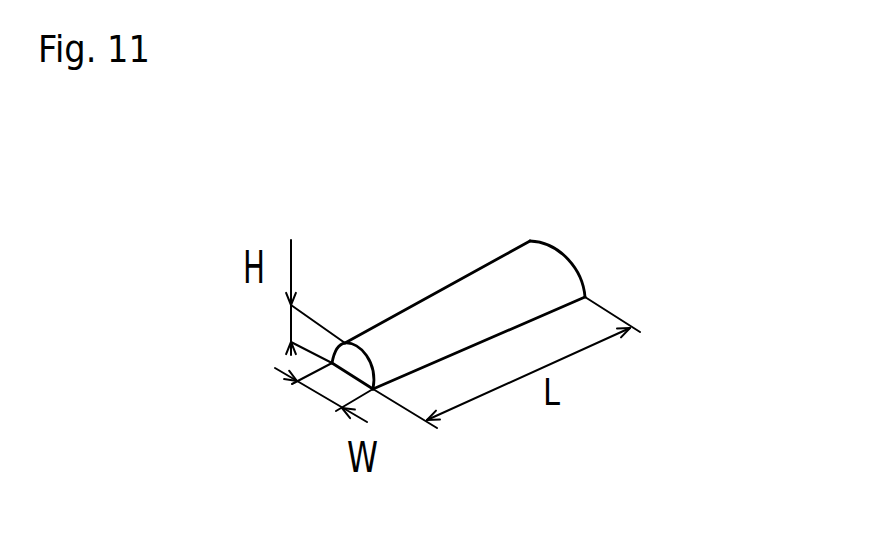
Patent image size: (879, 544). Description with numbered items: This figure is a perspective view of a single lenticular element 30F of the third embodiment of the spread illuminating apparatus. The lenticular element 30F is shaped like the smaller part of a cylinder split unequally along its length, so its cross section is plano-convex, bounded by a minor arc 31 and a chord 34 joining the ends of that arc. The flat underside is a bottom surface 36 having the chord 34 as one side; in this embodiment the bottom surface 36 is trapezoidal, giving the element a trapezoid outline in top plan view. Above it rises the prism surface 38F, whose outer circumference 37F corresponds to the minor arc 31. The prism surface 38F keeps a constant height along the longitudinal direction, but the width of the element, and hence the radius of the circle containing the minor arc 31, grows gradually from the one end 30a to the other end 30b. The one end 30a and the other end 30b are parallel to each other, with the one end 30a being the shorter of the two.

The lenticular element 30F is at (426, 325).
The one end 30a is at (415, 381).
The other end 30b is at (585, 297).
The minor arc 31 is at (366, 358).
The chord 34 is at (346, 373).
The bottom surface 36 is at (356, 391).
The outer circumference 37F is at (417, 313).
The prism surface 38F is at (430, 261).